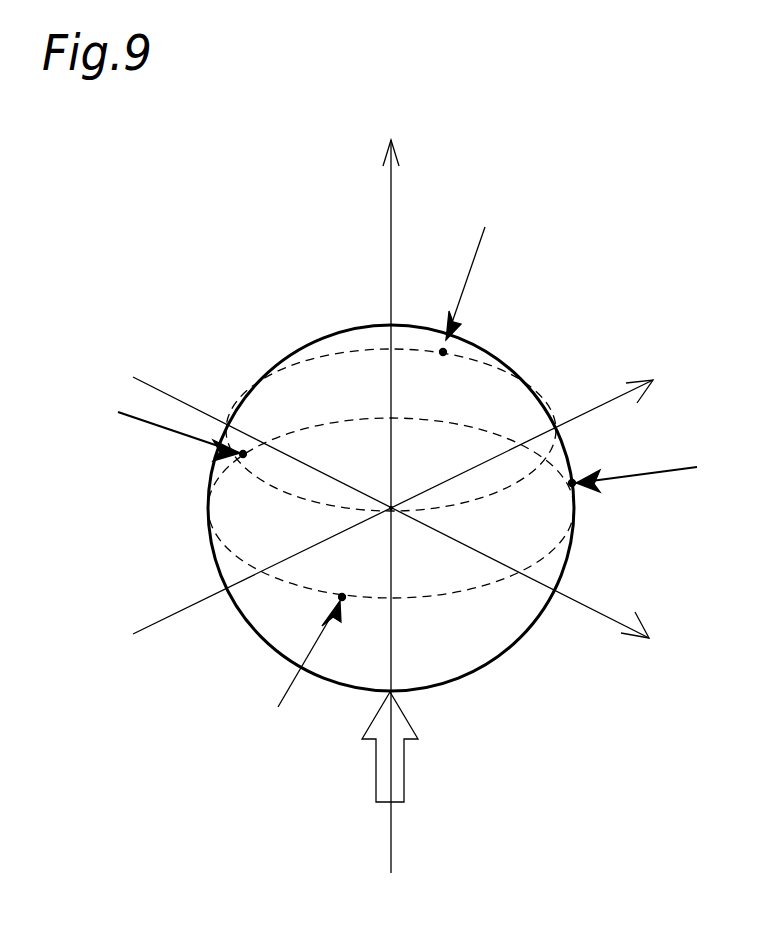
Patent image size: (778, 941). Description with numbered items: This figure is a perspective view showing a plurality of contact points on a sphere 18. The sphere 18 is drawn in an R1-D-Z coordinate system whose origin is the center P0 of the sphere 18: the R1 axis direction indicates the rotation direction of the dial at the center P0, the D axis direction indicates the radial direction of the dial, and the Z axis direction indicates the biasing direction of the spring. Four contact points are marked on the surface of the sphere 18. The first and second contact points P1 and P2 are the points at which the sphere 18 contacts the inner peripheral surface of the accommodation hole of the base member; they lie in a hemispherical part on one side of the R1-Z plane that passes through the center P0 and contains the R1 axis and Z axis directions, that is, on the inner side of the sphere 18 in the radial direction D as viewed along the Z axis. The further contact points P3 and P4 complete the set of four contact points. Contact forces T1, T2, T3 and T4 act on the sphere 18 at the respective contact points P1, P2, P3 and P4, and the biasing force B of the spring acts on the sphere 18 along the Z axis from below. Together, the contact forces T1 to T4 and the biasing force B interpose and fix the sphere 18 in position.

The sphere 18 is at (314, 338).
The Z axis Z is at (382, 498).
The R1 axis R1 is at (393, 489).
The D axis D is at (401, 507).
The center of the sphere P0 is at (377, 488).
The first contact point P1 is at (591, 502).
The second contact point P2 is at (341, 581).
The third contact point P3 is at (469, 325).
The fourth contact point P4 is at (240, 476).
The contact force T1 is at (653, 471).
The contact force T2 is at (301, 676).
The contact force T3 is at (480, 273).
The contact force T4 is at (160, 428).
The biasing force B is at (404, 778).